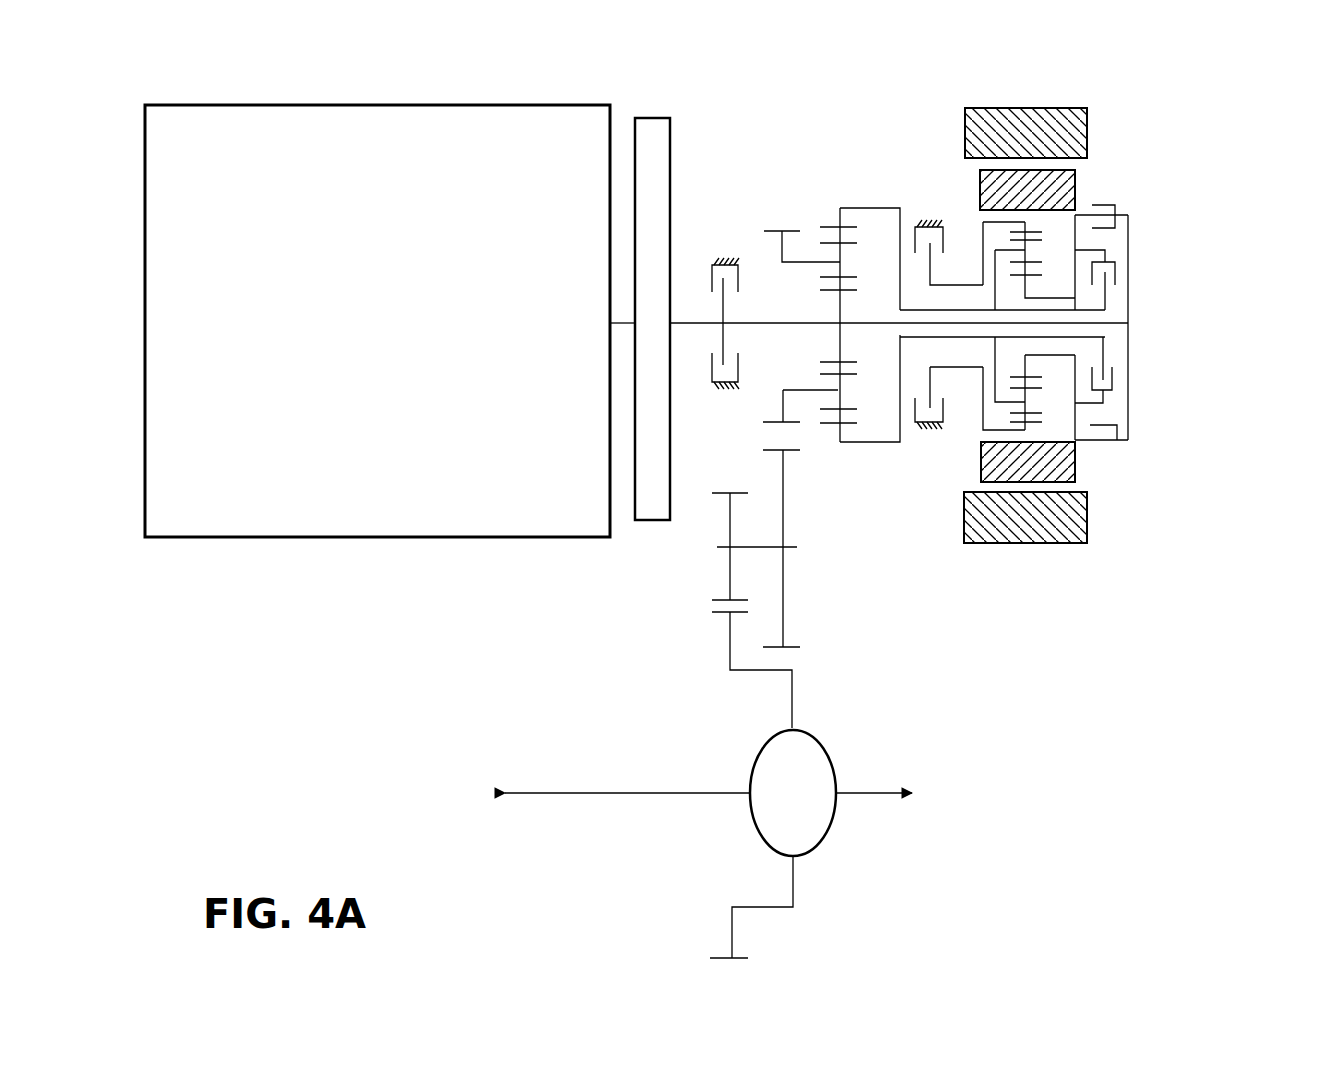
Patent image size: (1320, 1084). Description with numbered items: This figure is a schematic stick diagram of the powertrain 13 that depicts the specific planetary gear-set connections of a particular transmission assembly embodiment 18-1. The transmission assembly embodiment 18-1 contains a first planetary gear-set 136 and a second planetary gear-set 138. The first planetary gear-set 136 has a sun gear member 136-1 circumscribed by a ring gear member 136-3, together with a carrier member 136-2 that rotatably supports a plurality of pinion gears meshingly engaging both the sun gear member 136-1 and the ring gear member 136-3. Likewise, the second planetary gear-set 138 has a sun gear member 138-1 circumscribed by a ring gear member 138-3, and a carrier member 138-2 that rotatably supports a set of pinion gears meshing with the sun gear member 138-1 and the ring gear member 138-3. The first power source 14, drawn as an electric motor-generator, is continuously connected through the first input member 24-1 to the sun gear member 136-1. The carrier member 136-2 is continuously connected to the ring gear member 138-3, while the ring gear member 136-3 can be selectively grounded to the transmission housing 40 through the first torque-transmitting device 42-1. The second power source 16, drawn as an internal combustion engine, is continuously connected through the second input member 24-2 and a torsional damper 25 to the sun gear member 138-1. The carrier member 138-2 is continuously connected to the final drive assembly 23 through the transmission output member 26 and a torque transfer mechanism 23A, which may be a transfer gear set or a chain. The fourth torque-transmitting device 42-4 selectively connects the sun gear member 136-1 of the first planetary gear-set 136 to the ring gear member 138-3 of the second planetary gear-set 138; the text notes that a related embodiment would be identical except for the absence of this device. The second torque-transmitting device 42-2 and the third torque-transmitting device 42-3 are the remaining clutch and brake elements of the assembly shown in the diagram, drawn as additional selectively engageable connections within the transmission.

The powertrain 13 is at (1190, 172).
The first power source 14 is at (1087, 520).
The second power source 16 is at (367, 538).
The transmission assembly embodiment 18-1 is at (983, 90).
The final drive assembly 23 is at (826, 752).
The torque transfer mechanism 23A is at (800, 595).
The first input member 24-1 is at (1056, 367).
The second input member 24-2 is at (686, 323).
The torsional damper 25 is at (655, 118).
The transmission output member 26 is at (783, 405).
The transmission housing 40 is at (930, 437).
The first torque-transmitting device 42-1 is at (943, 410).
The second torque-transmitting device 42-2 is at (1105, 205).
The third torque-transmitting device 42-3 is at (740, 278).
The fourth torque-transmitting device 42-4 is at (1115, 378).
The first planetary gear-set 136 is at (968, 280).
The sun gear member 136-1 is at (1032, 277).
The carrier member 136-2 is at (972, 275).
The ring gear member 136-3 is at (1033, 428).
The second planetary gear-set 138 is at (862, 333).
The sun gear member 138-1 is at (833, 357).
The carrier member 138-2 is at (807, 390).
The ring gear member 138-3 is at (823, 225).